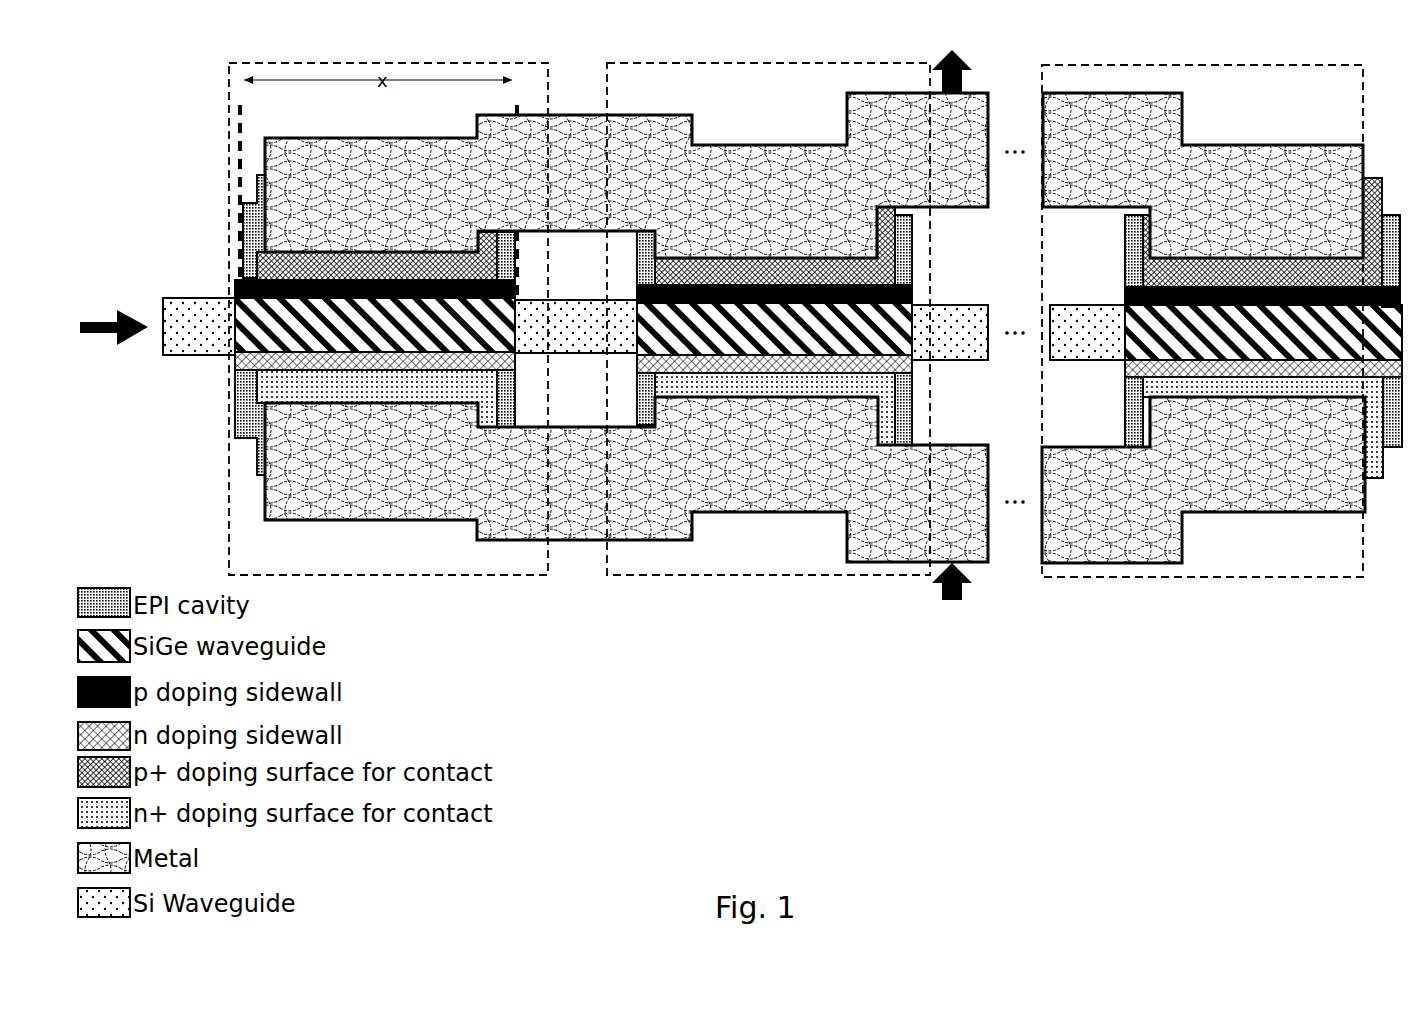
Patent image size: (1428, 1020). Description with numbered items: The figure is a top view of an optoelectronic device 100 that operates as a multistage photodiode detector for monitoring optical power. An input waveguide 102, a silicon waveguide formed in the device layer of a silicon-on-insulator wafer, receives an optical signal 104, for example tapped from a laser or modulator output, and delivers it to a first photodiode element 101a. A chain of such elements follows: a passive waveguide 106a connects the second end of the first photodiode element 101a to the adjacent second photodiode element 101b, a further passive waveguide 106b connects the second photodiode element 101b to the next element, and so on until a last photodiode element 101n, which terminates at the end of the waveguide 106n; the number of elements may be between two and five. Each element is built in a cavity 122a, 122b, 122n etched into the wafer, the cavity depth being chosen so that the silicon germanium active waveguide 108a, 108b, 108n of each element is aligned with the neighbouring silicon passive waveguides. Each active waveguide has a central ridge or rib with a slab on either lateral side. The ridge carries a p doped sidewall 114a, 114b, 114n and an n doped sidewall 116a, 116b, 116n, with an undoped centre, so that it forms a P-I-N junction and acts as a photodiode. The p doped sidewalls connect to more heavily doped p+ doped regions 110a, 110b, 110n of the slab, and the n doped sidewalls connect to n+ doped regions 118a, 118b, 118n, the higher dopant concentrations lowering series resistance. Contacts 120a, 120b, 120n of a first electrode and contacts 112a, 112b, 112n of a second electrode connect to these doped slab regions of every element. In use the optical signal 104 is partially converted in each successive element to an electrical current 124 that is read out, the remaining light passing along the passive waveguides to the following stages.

The optoelectronic device 100 is at (122, 150).
The first photodiode element 101a is at (225, 473).
The second photodiode element 101b is at (603, 578).
The last photodiode element 101n is at (1062, 581).
The input waveguide 102 is at (200, 322).
The optical signal 104 is at (91, 327).
The passive waveguide 106a is at (577, 303).
The passive waveguide 106b is at (945, 315).
The passive waveguide 106n is at (1080, 305).
The active waveguide 108a is at (325, 318).
The active waveguide 108b is at (715, 318).
The active waveguide 108n is at (1200, 318).
The p+ doped region 110a is at (350, 265).
The p+ doped region 110b is at (790, 275).
The p+ doped region 110n is at (1275, 275).
The first contact of second electrode 112a is at (408, 152).
The second contact of second electrode 112b is at (705, 160).
The contact of second electrode 112n is at (1322, 160).
The p doped sidewall 114a is at (270, 285).
The p doped sidewall 114b is at (668, 292).
The p doped sidewall 114n is at (1150, 300).
The n doped sidewall 116a is at (230, 363).
The n doped sidewall 116b is at (860, 365).
The n doped sidewall 116n is at (1350, 370).
The n+ doped region 118a is at (450, 390).
The n+ doped region 118b is at (800, 390).
The n+ doped region 118n is at (1290, 390).
The first contact of first electrode 120a is at (372, 488).
The second contact of first electrode 120b is at (720, 500).
The contact of first electrode 120n is at (1210, 500).
The cavity 122a is at (240, 412).
The cavity 122b is at (645, 425).
The cavity 122n is at (1133, 430).
The electrical current 124 is at (950, 66).